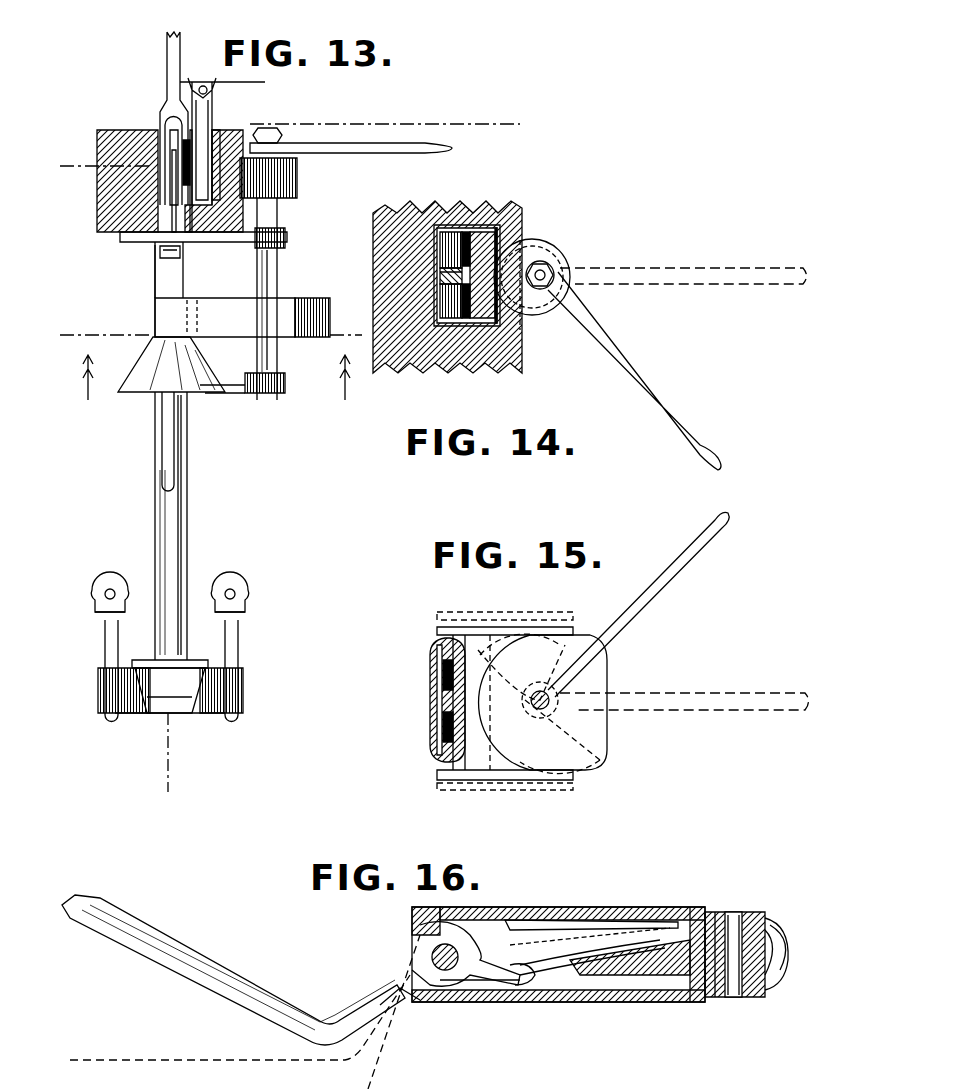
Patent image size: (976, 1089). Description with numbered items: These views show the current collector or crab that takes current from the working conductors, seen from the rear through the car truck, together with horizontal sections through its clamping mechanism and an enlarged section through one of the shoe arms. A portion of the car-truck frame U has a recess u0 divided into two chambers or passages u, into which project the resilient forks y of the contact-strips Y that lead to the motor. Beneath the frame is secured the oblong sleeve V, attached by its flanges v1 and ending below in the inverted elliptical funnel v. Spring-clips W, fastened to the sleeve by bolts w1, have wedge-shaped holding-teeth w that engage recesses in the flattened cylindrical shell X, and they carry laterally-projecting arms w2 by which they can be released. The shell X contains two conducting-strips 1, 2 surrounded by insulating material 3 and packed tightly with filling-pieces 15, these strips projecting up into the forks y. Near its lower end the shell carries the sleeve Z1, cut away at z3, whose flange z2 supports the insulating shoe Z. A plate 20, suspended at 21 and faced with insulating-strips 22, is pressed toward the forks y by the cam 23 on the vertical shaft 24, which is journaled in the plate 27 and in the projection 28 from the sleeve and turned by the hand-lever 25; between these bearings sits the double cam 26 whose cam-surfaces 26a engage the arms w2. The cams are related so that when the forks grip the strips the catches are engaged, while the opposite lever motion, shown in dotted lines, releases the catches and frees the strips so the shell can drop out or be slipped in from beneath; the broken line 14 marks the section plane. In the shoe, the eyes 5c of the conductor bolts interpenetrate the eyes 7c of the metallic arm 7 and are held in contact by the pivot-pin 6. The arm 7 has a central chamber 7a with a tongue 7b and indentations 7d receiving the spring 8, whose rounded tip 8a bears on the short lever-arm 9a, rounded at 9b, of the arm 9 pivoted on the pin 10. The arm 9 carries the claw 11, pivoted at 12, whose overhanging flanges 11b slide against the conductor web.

In FIG. 13, the contact-strip Y is at (166, 50).
In FIG. 13, the resilient fork y is at (160, 128).
In FIG. 13, the suspension point of plate 21 is at (203, 86).
In FIG. 13, the plate 20 is at (205, 135).
In FIG. 14, the plate 20 is at (500, 240).
In FIG. 13, the car-truck frame U is at (105, 132).
In FIG. 14, the car-truck frame U is at (402, 212).
In FIG. 13, the recess u0 is at (222, 132).
In FIG. 14, the recess u0 is at (440, 225).
In FIG. 13, the insulating-strip 22 is at (185, 178).
In FIG. 14, the insulating-strip 22 is at (478, 225).
In FIG. 13, the conducting-strip 2 is at (172, 215).
In FIG. 14, the conducting-strip 2 is at (440, 305).
In FIG. 15, the conducting-strip 2 is at (432, 672).
In FIG. 13, the section line 14 is at (284, 145).
In FIG. 13, the hand-lever 25 is at (352, 153).
In FIG. 14, the hand-lever 25 is at (628, 360).
In FIG. 15, the hand-lever 25 is at (650, 612).
In FIG. 13, the cam 23 is at (297, 180).
In FIG. 14, the cam 23 is at (537, 310).
In FIG. 13, the plate 27 is at (285, 235).
In FIG. 13, the flange v1 is at (125, 240).
In FIG. 13, the vertical shaft 24 is at (278, 268).
In FIG. 14, the vertical shaft 24 is at (545, 270).
In FIG. 15, the vertical shaft 24 is at (550, 693).
In FIG. 13, the bolt w1 is at (158, 252).
In FIG. 13, the spring-clip W is at (185, 280).
In FIG. 15, the spring-clip W is at (450, 627).
In FIG. 13, the oblong sleeve V is at (153, 296).
In FIG. 15, the oblong sleeve V is at (430, 716).
In FIG. 13, the laterally-projecting arm w2 is at (242, 317).
In FIG. 15, the laterally-projecting arm w2 is at (510, 635).
In FIG. 13, the filling-piece 15 is at (208, 362).
In FIG. 15, the filling-piece 15 is at (430, 648).
In FIG. 13, the double cam 26 is at (300, 350).
In FIG. 15, the double cam 26 is at (543, 702).
In FIG. 13, the inverted elliptical funnel v is at (135, 375).
In FIG. 13, the projection 28 is at (230, 392).
In FIG. 13, the shell X is at (175, 435).
In FIG. 15, the shell X is at (430, 692).
In FIG. 13, the cut-away portion of sleeve z3 is at (160, 445).
In FIG. 13, the sleeve Z1 is at (185, 522).
In FIG. 13, the flange z2 is at (140, 660).
In FIG. 13, the shoe Z is at (185, 702).
In FIG. 13, the metallic arm 7 is at (98, 693).
In FIG. 16, the metallic arm 7 is at (632, 906).
In FIG. 13, the arm 9 is at (105, 645).
In FIG. 16, the arm 9 is at (255, 985).
In FIG. 13, the claw 11 is at (93, 596).
In FIG. 13, the overhanging lip or flange 11b is at (110, 588).
In FIG. 13, the claw pivot 12 is at (167, 764).
In FIG. 14, the conducting-strip 1 is at (440, 250).
In FIG. 15, the conducting-strip 1 is at (432, 735).
In FIG. 14, the chamber or passage u is at (440, 276).
In FIG. 15, the double cam-surface 26a is at (498, 665).
In FIG. 15, the wedge-shaped holding-tooth w is at (437, 648).
In FIG. 15, the insulating material 3 is at (430, 665).
In FIG. 16, the central chamber 7a is at (485, 930).
In FIG. 16, the tongue 7b is at (630, 960).
In FIG. 16, the spring 8 is at (570, 920).
In FIG. 16, the indentation 7d is at (500, 912).
In FIG. 16, the pin 10 is at (445, 960).
In FIG. 16, the rounded tip 8a is at (488, 995).
In FIG. 16, the short lever-arm 9a is at (520, 990).
In FIG. 16, the rounded portion 9b is at (530, 985).
In FIG. 16, the eye 7c is at (710, 910).
In FIG. 16, the pivot-pin 6 is at (735, 910).
In FIG. 16, the eye 5c is at (768, 935).